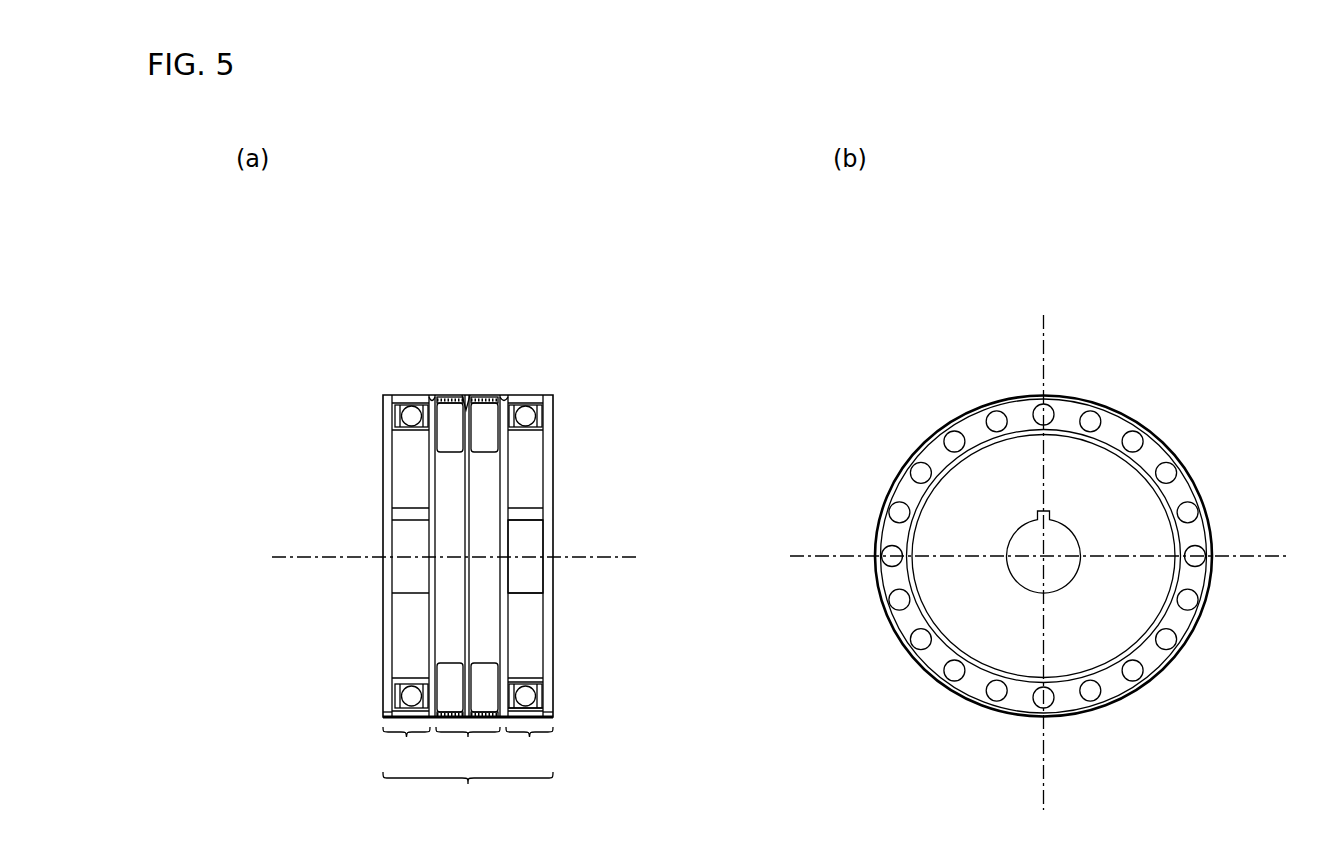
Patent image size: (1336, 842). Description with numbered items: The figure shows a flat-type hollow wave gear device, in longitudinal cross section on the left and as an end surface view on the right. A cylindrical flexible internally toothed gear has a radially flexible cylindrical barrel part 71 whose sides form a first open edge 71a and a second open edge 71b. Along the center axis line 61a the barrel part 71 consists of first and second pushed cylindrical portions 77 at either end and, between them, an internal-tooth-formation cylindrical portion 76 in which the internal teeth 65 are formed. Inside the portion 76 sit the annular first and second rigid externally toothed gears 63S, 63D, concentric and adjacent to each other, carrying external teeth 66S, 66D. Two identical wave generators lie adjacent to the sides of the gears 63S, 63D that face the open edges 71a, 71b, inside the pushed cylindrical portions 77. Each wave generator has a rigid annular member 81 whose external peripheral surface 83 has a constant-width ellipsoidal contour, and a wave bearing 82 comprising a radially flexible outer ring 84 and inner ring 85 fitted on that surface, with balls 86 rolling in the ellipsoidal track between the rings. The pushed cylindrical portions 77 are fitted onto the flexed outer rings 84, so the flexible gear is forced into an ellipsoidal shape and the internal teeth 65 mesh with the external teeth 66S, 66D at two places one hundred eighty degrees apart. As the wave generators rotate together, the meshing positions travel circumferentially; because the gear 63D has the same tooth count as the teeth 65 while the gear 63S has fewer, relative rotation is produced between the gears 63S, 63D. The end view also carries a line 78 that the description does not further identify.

The center axis line 61a is at (290, 557).
The first rigid externally toothed gear 63S is at (430, 396).
The second rigid externally toothed gear 63D is at (506, 396).
The internal teeth 65 is at (466, 400).
The external teeth of first rigid externally toothed gear 66S is at (448, 398).
The external teeth of second rigid externally toothed gear 66D is at (486, 398).
The cylindrical barrel part 71 is at (468, 790).
The first open edge 71a is at (383, 717).
The second open edge 71b is at (553, 717).
The internal-tooth-formation cylindrical portion 76 is at (468, 748).
The rotation axis 77 is at (1258, 566).
The keyway 78 is at (1050, 343).
The rigid annular member 81 is at (540, 612).
The wave bearing 82 is at (548, 691).
The external peripheral surface 83 is at (522, 682).
The outer ring 84 is at (548, 706).
The inner ring 85 is at (545, 690).
The balls 86 is at (533, 698).